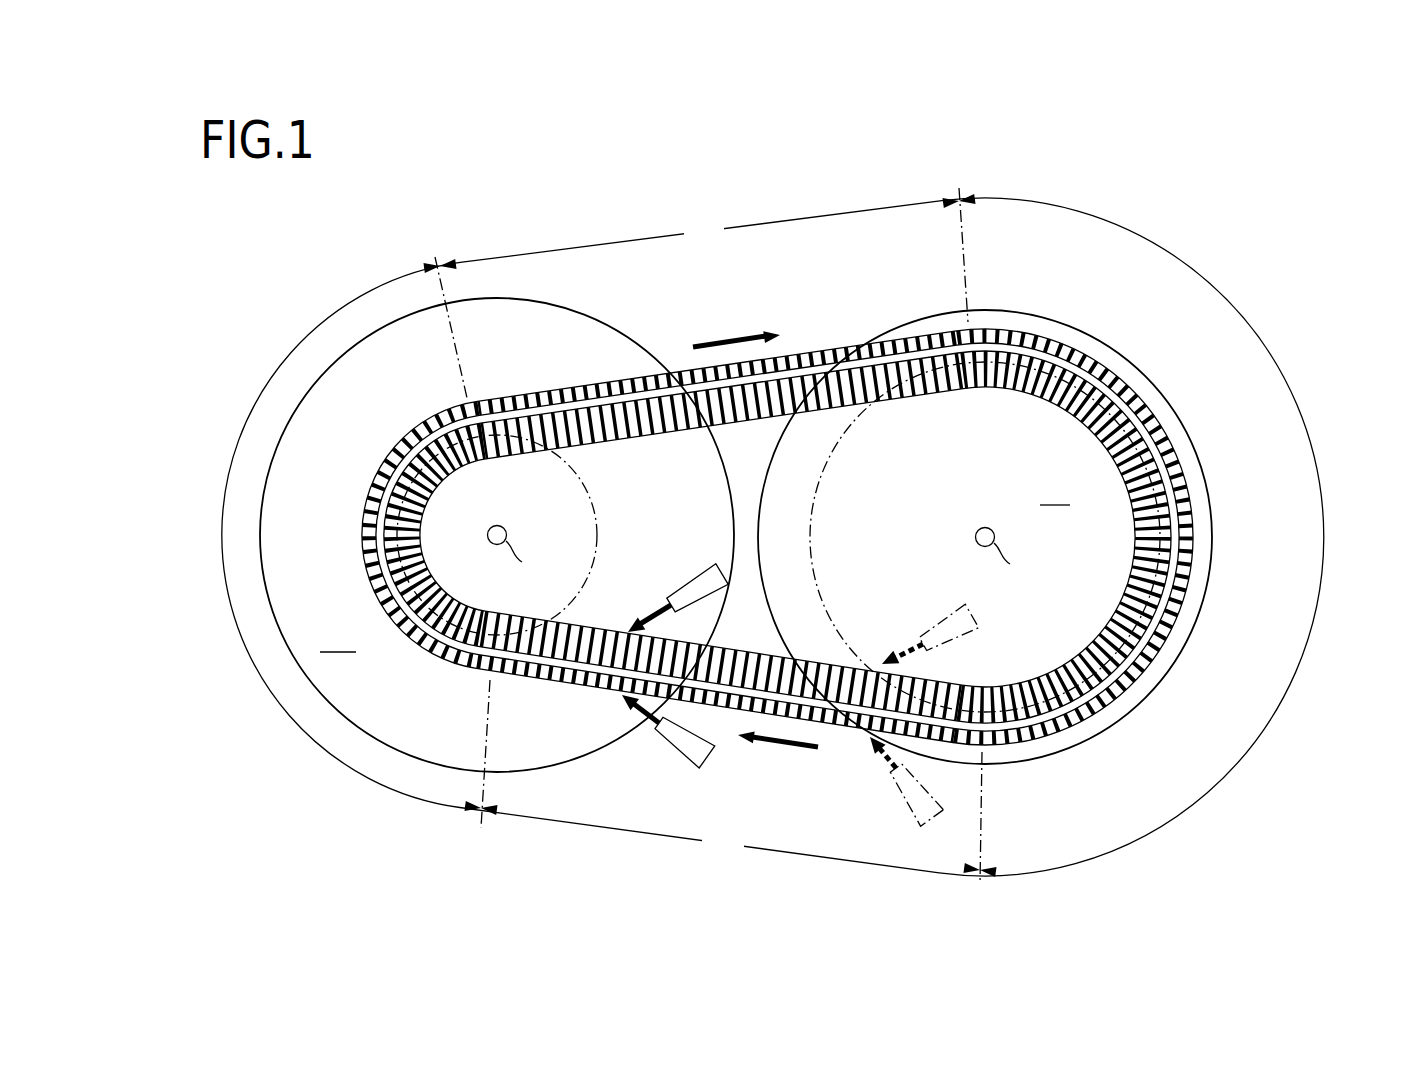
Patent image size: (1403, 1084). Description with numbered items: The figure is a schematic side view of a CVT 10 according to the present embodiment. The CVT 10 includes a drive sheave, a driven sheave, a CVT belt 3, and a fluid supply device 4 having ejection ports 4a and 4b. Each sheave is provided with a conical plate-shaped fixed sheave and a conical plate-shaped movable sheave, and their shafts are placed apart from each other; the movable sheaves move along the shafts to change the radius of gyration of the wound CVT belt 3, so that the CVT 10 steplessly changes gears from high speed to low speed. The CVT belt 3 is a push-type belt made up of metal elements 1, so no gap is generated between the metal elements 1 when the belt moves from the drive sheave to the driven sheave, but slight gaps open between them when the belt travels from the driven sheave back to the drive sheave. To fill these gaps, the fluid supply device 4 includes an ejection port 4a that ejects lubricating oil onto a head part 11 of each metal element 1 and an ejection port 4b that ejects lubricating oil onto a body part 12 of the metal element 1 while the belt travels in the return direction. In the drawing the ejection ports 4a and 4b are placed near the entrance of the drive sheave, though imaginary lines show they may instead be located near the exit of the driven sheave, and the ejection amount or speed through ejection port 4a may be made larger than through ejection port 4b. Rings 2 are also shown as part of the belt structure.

The metal element 1 is at (897, 380).
The ring 2 is at (901, 360).
The CVT belt 3 is at (777, 490).
The fluid supply device 4 is at (794, 685).
The ejection port 4a is at (677, 755).
The ejection port 4b is at (688, 585).
The CVT 10 is at (338, 275).
The head part 11 is at (572, 684).
The body part 12 is at (588, 627).